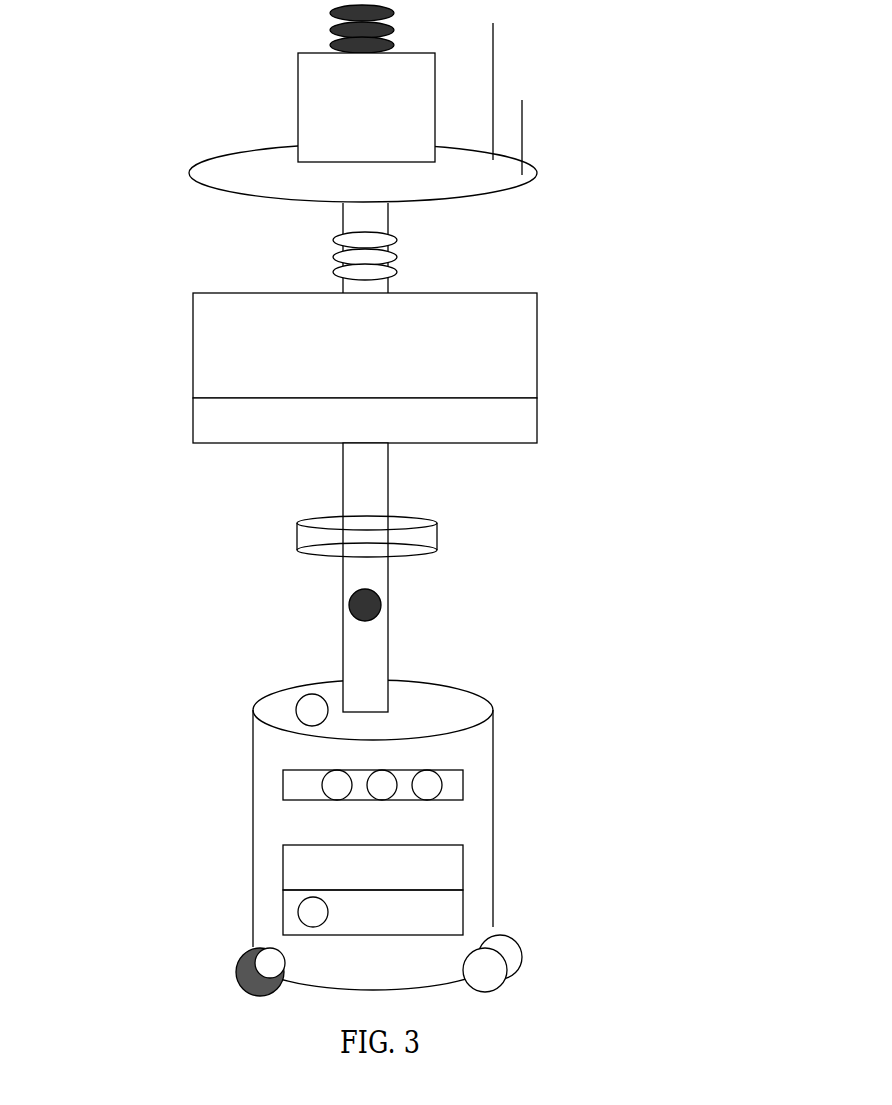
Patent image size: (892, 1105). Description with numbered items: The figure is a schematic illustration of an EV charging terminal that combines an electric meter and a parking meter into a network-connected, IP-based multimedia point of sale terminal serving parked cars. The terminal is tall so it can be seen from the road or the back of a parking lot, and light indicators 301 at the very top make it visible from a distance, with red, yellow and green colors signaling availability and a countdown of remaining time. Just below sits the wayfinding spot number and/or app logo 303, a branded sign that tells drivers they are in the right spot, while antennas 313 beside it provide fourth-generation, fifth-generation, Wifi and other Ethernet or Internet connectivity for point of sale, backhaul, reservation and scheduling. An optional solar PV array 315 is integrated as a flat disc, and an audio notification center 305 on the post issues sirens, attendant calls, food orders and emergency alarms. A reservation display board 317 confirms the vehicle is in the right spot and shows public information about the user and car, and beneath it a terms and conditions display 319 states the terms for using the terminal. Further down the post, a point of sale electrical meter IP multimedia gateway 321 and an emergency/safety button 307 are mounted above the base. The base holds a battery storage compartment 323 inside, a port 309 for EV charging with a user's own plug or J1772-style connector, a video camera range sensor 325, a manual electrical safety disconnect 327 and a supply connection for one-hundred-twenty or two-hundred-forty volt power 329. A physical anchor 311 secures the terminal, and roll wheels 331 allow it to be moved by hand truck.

The light indicators 301 is at (293, 12).
The wayfinding spot # and/or app logo 303 is at (235, 115).
The audio notification center 305 is at (308, 249).
The emergency/safety button 307 is at (325, 605).
The port 309 is at (280, 710).
The physical anchor 311 is at (220, 970).
The antennas 313 is at (555, 115).
The optional solar PV array 315 is at (467, 189).
The reservation display board 317 is at (555, 342).
The terms and conditions display 319 is at (555, 413).
The point of sale electrical meter IP multimedia gateway 321 is at (465, 533).
The battery storage compartment 323 is at (433, 697).
The video camera range sensor 325 is at (480, 785).
The manual electrical safety disconnect 327 is at (497, 875).
The supply connection for 120 V or 240 V 329 is at (480, 922).
The roll wheels 331 is at (523, 995).